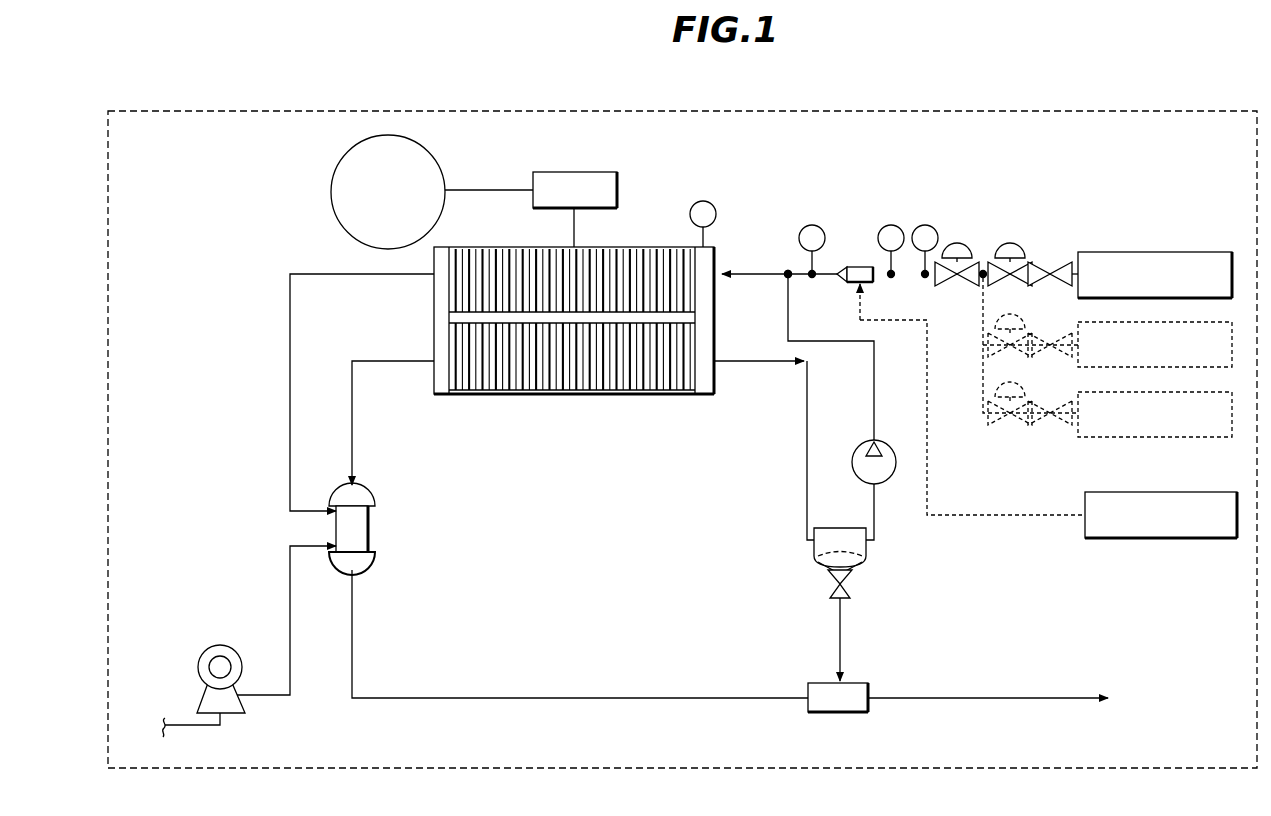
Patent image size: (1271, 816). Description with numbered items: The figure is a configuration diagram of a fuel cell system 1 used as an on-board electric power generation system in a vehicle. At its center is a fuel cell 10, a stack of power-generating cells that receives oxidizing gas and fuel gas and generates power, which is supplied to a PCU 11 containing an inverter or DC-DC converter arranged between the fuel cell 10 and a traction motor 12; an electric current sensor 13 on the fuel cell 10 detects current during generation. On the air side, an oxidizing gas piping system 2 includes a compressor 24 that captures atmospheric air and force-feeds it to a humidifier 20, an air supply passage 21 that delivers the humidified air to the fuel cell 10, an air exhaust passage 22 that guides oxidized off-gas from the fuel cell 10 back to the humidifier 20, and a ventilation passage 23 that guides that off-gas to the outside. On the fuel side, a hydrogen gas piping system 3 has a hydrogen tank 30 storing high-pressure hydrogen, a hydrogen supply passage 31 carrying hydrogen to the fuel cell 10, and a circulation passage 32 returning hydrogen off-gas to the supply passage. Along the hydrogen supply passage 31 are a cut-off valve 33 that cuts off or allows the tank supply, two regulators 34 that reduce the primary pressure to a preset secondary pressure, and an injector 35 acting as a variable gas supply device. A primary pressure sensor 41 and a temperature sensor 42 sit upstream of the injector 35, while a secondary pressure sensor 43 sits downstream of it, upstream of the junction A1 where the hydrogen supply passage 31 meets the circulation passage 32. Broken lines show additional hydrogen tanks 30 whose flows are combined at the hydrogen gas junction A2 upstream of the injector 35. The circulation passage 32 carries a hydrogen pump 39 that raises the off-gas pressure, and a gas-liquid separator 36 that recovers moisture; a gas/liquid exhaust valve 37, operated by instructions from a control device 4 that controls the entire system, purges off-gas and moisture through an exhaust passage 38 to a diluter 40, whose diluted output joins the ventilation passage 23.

The fuel cell system 1 is at (567, 108).
The oxidizing gas piping system 2 is at (390, 517).
The hydrogen gas piping system 3 is at (798, 546).
The control device 4 is at (1158, 492).
The fuel cell 10 is at (665, 396).
The PCU (Power Control Unit) 11 is at (618, 194).
The traction motor 12 is at (333, 197).
The electric current sensor 13 is at (710, 202).
The humidifier 20 is at (372, 537).
The air supply passage 21 is at (288, 462).
The air exhaust passage 22 is at (354, 447).
The ventilation passage 23 is at (746, 697).
The compressor 24 is at (228, 646).
The hydrogen tank 30 is at (1184, 252).
The hydrogen supply passage 31 is at (742, 272).
The circulation passage 32 is at (805, 494).
The cut-off valve 33 is at (1048, 263).
The regulator 34 is at (960, 244).
The injector 35 is at (862, 265).
The gas-liquid separator 36 is at (828, 527).
The gas/liquid exhaust valve 37 is at (828, 586).
The exhaust passage 38 is at (842, 645).
The hydrogen pump 39 is at (866, 440).
The diluter 40 is at (870, 690).
The primary pressure sensor 41 is at (894, 224).
The temperature sensor 42 is at (929, 224).
The secondary pressure sensor 43 is at (815, 224).
The junction A1 is at (784, 280).
The hydrogen gas junction A2 is at (980, 280).